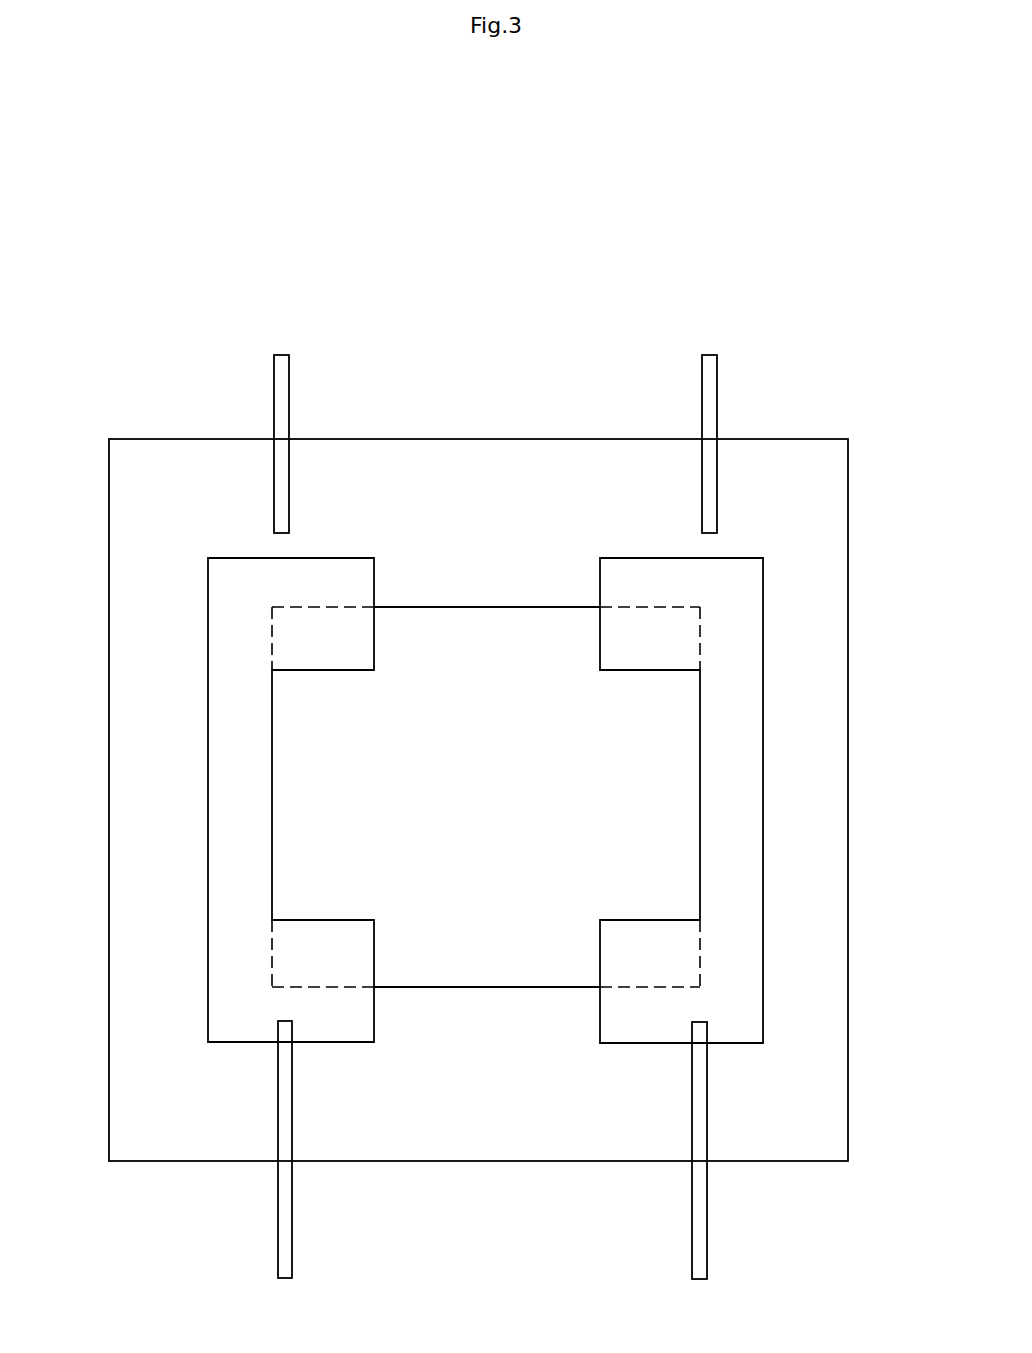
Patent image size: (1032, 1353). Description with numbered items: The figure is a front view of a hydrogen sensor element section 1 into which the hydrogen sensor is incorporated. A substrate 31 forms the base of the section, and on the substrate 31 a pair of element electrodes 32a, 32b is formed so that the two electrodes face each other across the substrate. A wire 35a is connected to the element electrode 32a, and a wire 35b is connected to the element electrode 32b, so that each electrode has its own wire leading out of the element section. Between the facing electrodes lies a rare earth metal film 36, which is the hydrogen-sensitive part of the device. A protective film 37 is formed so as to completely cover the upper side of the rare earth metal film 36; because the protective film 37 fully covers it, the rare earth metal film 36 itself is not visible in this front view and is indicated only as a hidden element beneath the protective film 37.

The semiconductor device 1 is at (437, 312).
The substrate 31 is at (160, 468).
The element electrode 32a is at (220, 607).
The element electrode 32b is at (740, 599).
The wire 35a is at (282, 1238).
The wire 35b is at (702, 1238).
The rare earth metal film 36 is at (337, 783).
The protective film 37 is at (337, 870).